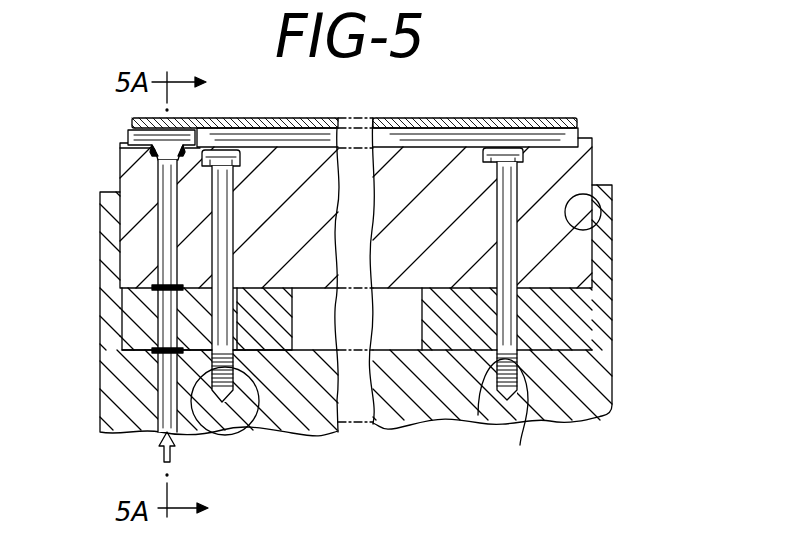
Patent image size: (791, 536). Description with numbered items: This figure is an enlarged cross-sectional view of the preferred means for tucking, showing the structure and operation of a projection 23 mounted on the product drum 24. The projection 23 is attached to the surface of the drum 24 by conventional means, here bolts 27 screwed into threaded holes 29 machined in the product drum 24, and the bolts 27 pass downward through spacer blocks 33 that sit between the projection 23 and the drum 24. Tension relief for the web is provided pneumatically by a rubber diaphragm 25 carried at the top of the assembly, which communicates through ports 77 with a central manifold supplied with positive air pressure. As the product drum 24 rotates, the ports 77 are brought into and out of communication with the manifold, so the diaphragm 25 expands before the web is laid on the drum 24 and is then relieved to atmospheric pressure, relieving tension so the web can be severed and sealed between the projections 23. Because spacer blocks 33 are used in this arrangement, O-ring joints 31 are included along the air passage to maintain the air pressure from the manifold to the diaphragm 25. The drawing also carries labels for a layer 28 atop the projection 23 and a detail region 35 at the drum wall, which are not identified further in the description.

The projection 23 is at (598, 156).
The product drum 24 is at (600, 385).
The rubber diaphragm 25 is at (130, 127).
The bolt 27 is at (198, 412).
The abrasive plate 28 is at (463, 117).
The threaded hole 29 is at (258, 400).
The O-ring joint 31 is at (146, 294).
The spacer block 33 is at (262, 325).
The clearance detail 35 is at (600, 225).
The port 77 is at (160, 382).